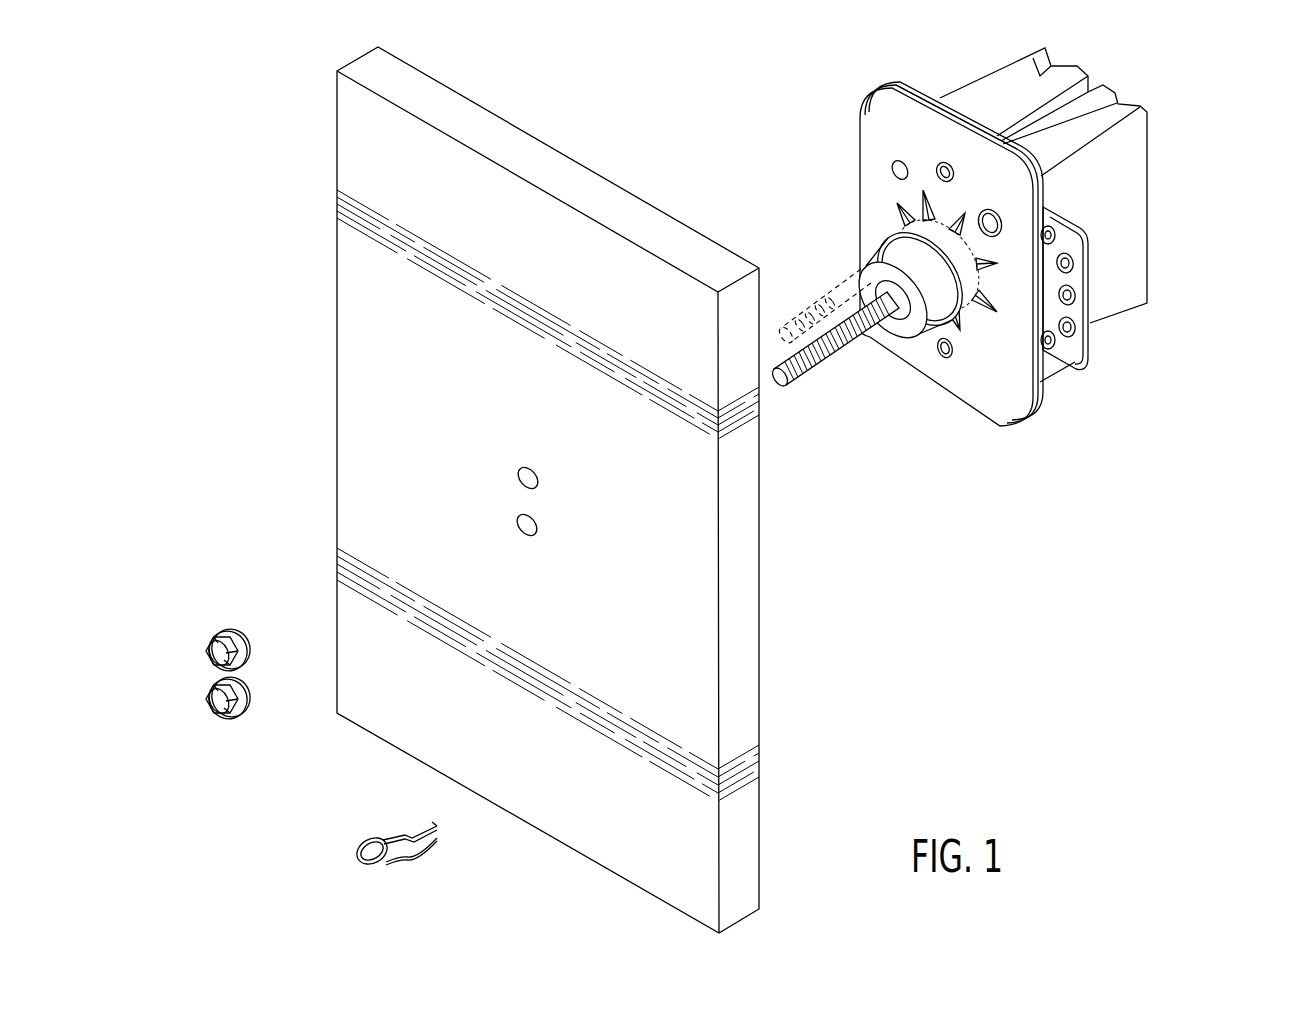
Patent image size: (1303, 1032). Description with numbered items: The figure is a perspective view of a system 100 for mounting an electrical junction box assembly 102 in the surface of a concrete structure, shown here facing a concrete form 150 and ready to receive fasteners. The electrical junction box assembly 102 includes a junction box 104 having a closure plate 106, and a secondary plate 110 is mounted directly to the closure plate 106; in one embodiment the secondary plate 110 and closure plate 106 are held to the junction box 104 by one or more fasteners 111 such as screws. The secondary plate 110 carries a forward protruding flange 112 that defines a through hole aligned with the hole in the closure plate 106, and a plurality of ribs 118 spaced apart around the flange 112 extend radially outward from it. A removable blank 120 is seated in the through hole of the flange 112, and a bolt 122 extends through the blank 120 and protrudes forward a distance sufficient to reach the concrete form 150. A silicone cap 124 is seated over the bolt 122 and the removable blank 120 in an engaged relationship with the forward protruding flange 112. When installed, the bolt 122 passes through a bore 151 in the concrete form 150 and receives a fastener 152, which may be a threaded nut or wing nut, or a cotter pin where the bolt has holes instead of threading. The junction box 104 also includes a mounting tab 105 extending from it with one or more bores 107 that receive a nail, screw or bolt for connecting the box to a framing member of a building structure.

The system 100 is at (1058, 559).
The electrical junction box assembly 102 is at (1178, 352).
The junction box 104 is at (992, 88).
The mounting tab 105 is at (1088, 350).
The closure plate 106 is at (915, 88).
The bores 107 is at (1077, 297).
The secondary plate 110 is at (872, 137).
The fasteners 111 is at (942, 357).
The forward protruding flange 112 is at (967, 293).
The ribs 118 is at (892, 213).
The removable blank 120 is at (869, 320).
The bolt 122 is at (797, 312).
The silicone cap 124 is at (910, 325).
The concrete form 150 is at (745, 690).
The bore 151 is at (518, 533).
The fastener 152 is at (243, 710).